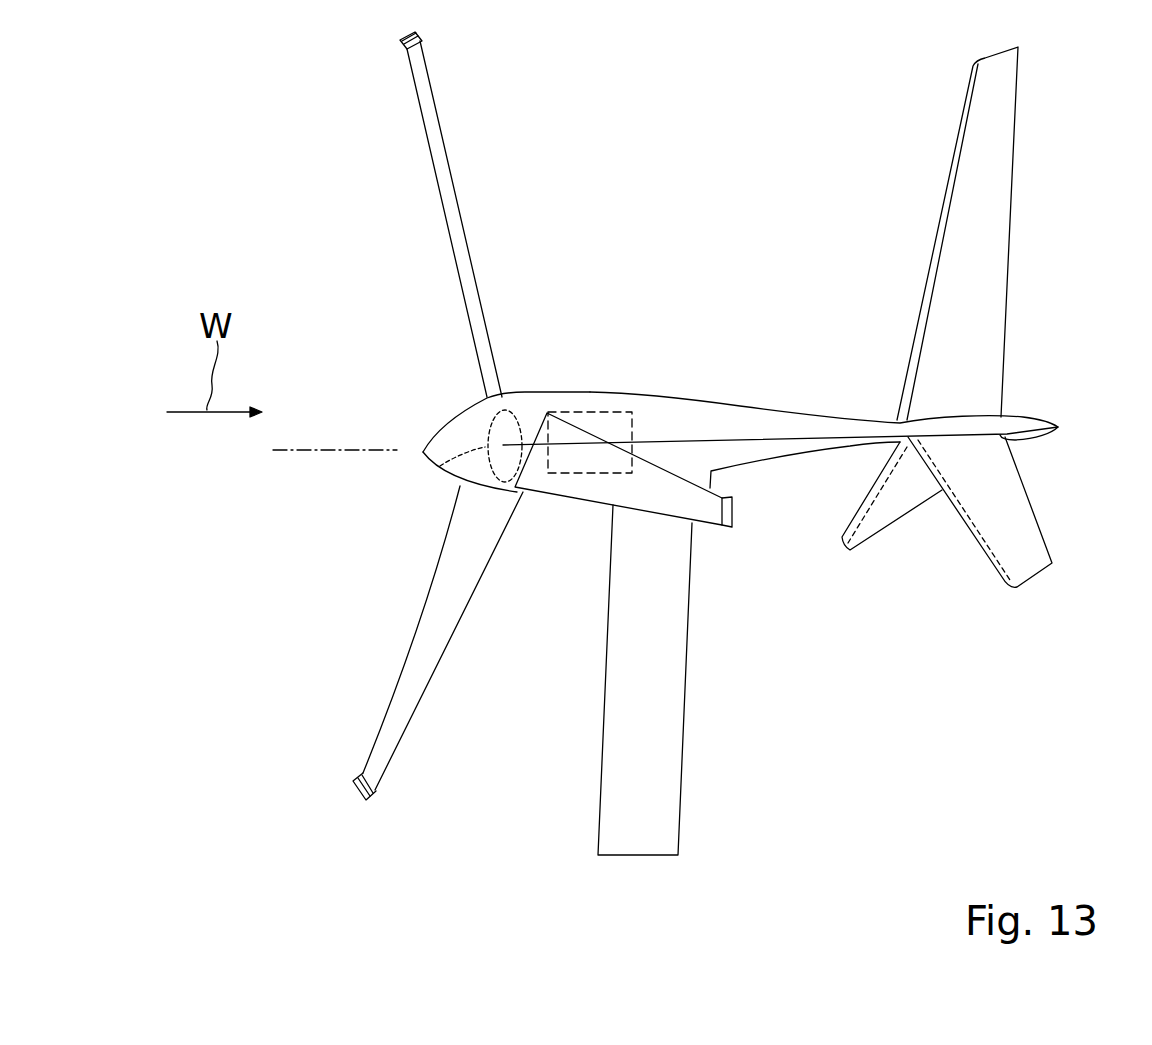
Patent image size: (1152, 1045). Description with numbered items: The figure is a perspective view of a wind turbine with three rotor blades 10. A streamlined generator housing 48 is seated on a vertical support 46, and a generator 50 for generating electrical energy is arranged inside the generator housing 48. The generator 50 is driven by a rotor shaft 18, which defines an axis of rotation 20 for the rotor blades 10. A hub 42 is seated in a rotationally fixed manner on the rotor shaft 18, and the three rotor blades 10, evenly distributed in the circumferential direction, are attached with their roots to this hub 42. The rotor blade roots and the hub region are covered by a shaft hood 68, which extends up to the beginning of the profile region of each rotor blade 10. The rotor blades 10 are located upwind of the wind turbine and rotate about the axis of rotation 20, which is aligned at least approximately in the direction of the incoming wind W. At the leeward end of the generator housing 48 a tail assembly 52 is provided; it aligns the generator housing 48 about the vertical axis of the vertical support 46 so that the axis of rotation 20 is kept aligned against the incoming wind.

The rotor blade 10 is at (427, 127).
The rotor shaft 18 is at (528, 418).
The axis of rotation 20 is at (337, 452).
The hub 42 is at (442, 467).
The vertical support 46 is at (655, 742).
The generator housing 48 is at (683, 409).
The generator 50 is at (600, 408).
The tail assembly 52 is at (983, 273).
The shaft hood 68 is at (451, 445).